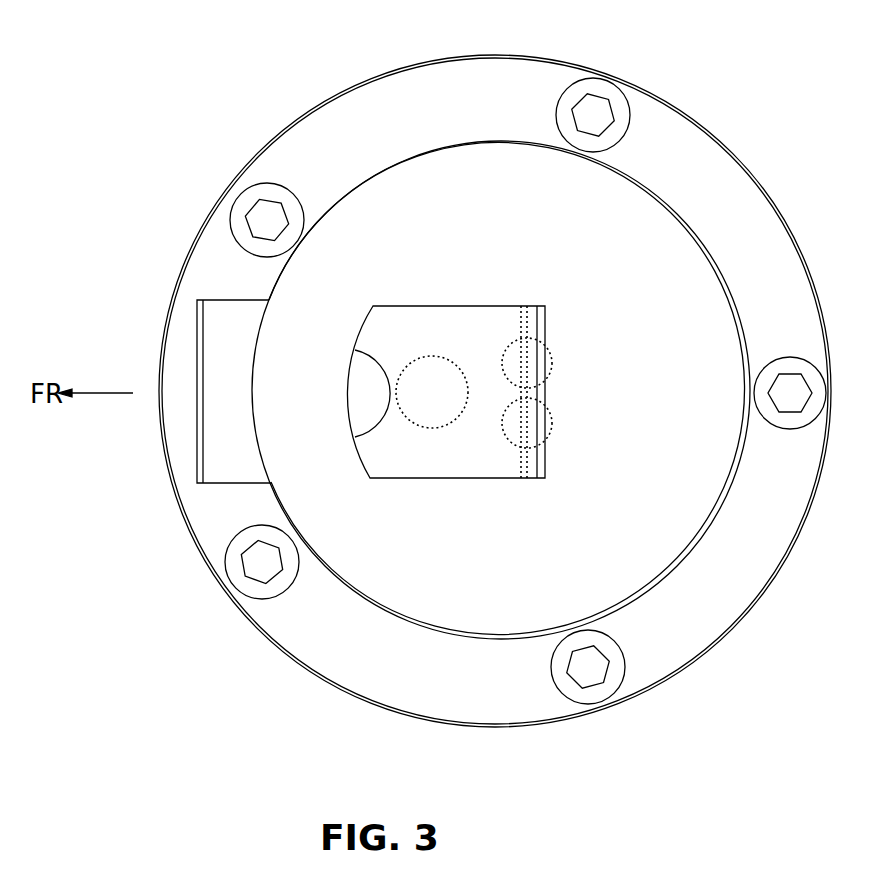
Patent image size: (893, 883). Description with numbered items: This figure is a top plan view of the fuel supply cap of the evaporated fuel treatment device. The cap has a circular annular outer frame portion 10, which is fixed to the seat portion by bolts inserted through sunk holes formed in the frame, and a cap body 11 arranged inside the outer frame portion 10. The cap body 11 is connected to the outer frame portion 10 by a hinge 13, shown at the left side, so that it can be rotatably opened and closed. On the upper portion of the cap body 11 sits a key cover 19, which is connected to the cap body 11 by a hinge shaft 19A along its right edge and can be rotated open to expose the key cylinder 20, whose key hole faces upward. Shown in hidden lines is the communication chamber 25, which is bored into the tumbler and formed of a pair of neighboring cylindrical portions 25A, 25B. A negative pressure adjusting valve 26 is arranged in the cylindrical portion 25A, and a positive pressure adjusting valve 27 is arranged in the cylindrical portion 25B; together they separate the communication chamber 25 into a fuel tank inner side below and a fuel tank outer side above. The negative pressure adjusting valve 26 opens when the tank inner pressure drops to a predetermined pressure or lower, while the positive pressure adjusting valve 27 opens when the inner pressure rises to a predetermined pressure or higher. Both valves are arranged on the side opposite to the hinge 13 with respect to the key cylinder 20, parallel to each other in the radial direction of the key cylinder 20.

The outer frame portion 10 is at (356, 113).
The cap body 11 is at (640, 282).
The hinge 13 is at (225, 434).
The key cover 19 is at (463, 328).
The hinge shaft 19A is at (544, 328).
The key cylinder 20 is at (432, 357).
The communication chamber 25 is at (687, 342).
The cylindrical portion 25A is at (552, 433).
The cylindrical portion 25B is at (552, 355).
The negative pressure adjusting valve 26 is at (508, 434).
The positive pressure adjusting valve 27 is at (508, 352).